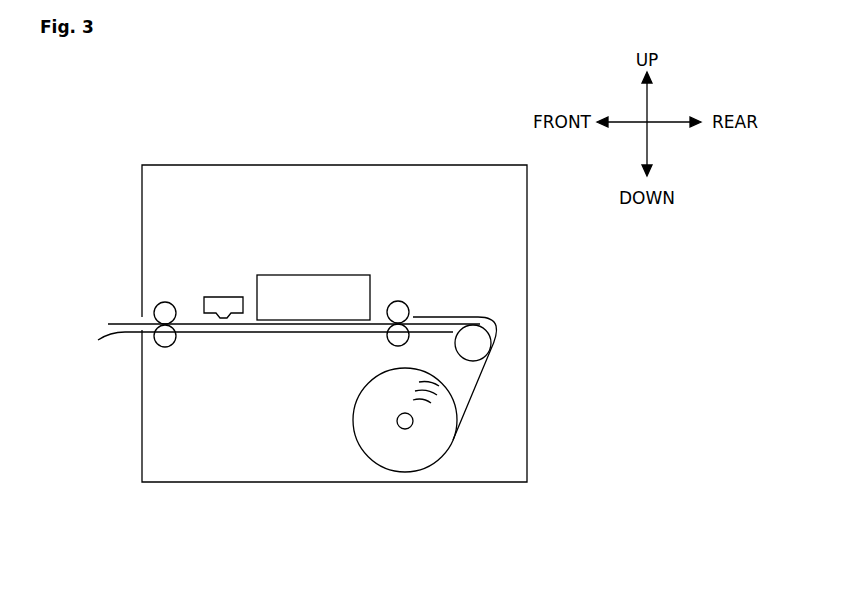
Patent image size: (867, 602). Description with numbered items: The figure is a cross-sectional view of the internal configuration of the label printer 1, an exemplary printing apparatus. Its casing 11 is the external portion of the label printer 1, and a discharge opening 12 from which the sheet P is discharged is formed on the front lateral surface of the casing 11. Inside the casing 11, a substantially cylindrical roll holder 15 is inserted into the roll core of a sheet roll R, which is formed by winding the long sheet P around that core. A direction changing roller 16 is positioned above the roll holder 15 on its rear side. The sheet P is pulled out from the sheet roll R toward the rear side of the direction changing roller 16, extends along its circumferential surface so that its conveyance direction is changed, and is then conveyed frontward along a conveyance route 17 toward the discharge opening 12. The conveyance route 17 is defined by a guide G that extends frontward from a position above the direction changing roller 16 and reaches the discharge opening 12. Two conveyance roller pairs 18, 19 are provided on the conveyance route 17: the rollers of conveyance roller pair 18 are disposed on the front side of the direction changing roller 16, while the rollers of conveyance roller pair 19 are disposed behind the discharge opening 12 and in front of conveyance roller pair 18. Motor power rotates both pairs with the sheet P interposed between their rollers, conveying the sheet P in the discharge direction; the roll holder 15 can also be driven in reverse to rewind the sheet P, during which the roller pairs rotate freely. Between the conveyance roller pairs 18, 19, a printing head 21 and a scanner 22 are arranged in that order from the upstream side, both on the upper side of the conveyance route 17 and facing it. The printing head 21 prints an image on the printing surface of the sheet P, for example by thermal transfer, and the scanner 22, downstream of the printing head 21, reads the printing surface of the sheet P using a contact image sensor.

The label printer 1 is at (503, 510).
The casing 11 is at (527, 461).
The discharge opening 12 is at (130, 315).
The roll holder 15 is at (407, 429).
The direction changing roller 16 is at (481, 343).
The conveyance route 17 is at (250, 334).
The conveyance roller pair 18 is at (400, 336).
The conveyance roller pair 19 is at (166, 337).
The printing head 21 is at (315, 290).
The scanner 22 is at (236, 305).
The sheet P is at (442, 318).
The guide G is at (190, 343).
The sheet roll R is at (353, 432).